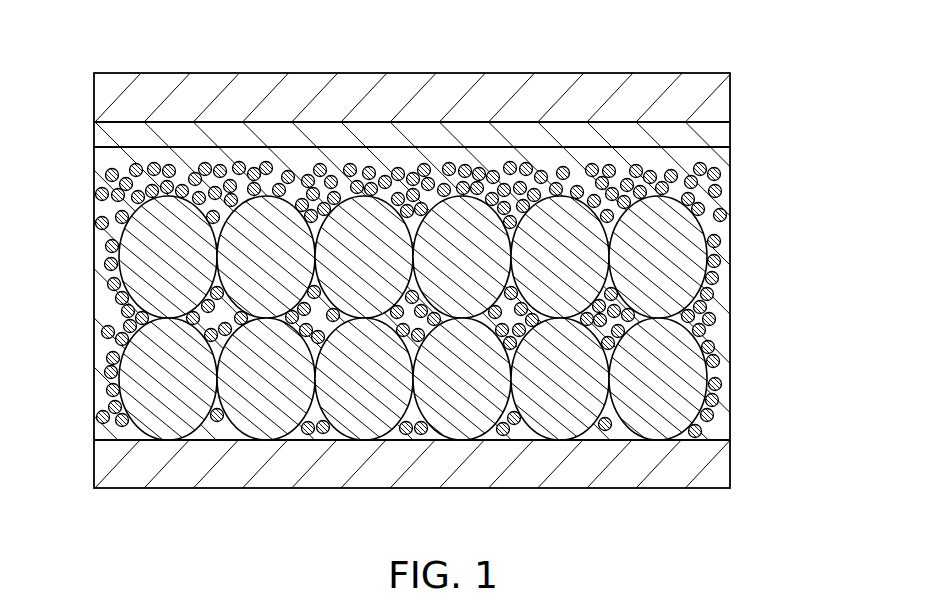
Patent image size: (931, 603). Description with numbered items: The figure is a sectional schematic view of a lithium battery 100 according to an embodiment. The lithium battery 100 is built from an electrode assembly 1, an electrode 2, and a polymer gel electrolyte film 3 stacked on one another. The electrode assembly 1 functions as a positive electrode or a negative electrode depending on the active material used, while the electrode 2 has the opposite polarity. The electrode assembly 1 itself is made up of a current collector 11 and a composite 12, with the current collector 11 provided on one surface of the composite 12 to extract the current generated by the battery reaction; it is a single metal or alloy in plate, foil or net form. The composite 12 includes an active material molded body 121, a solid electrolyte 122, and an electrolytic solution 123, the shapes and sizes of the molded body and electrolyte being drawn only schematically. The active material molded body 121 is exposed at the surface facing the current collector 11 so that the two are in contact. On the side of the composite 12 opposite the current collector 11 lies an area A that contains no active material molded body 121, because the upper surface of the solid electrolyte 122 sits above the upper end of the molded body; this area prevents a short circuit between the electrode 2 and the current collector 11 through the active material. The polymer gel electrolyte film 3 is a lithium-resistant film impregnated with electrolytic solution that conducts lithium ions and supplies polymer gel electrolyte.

The lithium battery 100 is at (662, 56).
The electrode assembly 1 is at (465, 307).
The electrode 2 is at (717, 99).
The polymer gel electrolyte film 3 is at (717, 138).
The current collector 11 is at (448, 459).
The composite 12 is at (465, 281).
The active material molded body 121 is at (692, 263).
The solid electrolyte 122 is at (776, 150).
The electrolytic solution 123 is at (720, 197).
The area A is at (91, 150).